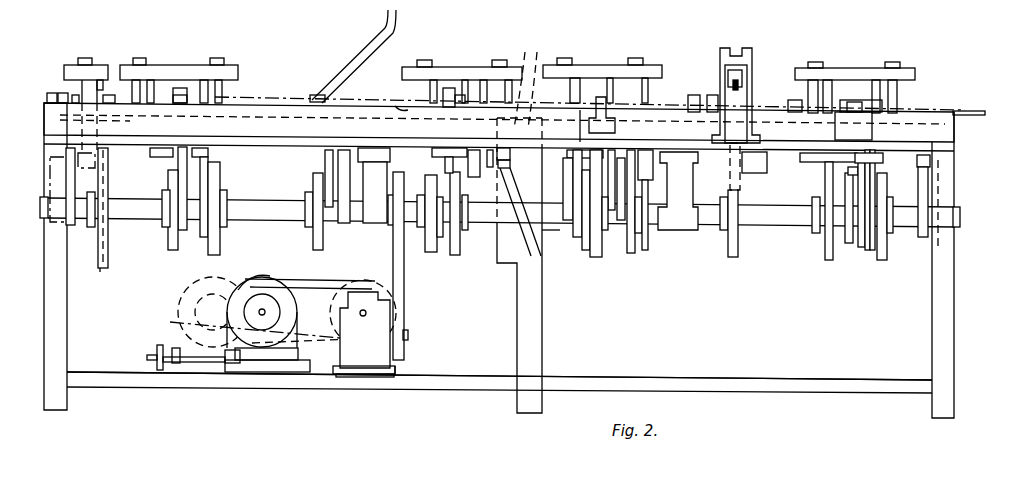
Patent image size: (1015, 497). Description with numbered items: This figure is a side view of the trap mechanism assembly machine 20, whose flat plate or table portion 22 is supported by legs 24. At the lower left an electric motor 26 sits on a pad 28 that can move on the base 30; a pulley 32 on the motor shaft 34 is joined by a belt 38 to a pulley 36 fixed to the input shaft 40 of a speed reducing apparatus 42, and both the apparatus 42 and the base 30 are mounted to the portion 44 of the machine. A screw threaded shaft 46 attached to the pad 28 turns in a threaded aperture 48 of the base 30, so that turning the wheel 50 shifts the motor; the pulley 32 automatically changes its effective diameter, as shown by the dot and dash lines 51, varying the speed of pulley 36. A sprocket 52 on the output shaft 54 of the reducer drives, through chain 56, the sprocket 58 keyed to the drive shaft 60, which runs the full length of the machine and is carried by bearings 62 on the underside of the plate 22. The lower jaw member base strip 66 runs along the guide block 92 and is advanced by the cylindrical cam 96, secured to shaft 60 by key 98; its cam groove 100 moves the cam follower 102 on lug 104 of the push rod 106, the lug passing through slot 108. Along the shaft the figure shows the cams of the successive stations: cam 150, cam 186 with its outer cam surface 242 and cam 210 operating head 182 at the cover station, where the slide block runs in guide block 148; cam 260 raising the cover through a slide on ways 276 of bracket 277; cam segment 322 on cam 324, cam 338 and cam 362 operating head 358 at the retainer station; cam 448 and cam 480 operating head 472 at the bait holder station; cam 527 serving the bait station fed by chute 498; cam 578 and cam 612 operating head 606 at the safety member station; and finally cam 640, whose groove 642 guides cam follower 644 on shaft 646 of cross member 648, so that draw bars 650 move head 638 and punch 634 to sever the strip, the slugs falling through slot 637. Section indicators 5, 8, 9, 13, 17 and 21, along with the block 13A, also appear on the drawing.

The trap mechanism assembly machine 20 is at (955, 168).
The table portion 22 is at (955, 148).
The legs 24 is at (955, 312).
The electric motor 26 is at (237, 370).
The pad 28 is at (270, 374).
The base 30 is at (293, 374).
The pulley 32 is at (258, 278).
The motor shaft 34 is at (281, 331).
The pulley 36 is at (310, 294).
The belt 38 is at (300, 280).
The input shaft 40 is at (363, 316).
The speed reducing apparatus 42 is at (365, 380).
The portion of the machine 44 is at (452, 386).
The screw threaded shaft 46 is at (205, 368).
The threaded aperture 48 is at (166, 372).
The wheel 50 is at (156, 357).
The dot and dash lines 51 is at (180, 320).
The sprocket 52 is at (398, 378).
The output shaft 54 is at (396, 366).
The chain 56 is at (406, 334).
The sprocket 58 is at (394, 258).
The drive shaft 60 is at (724, 230).
The bearings 62 is at (680, 232).
The lower jaw member base strip 66 is at (965, 116).
The guide block 92 is at (955, 140).
The cylindrical cam 96 is at (518, 280).
The key 98 is at (496, 205).
The cam groove 100 is at (578, 236).
The cam follower 102 is at (500, 165).
The lug 104 is at (519, 84).
The push rod 106 is at (403, 112).
The slot 108 is at (600, 96).
The guide block 148 is at (835, 128).
The cam 150 is at (828, 262).
The head 182 is at (915, 72).
The cam 186 is at (850, 248).
The cam 210 is at (882, 260).
The cam surface 242 is at (870, 252).
The cam 260 is at (733, 258).
The ways 276 is at (735, 48).
The bracket 277 is at (720, 70).
The cam segment 322 is at (645, 250).
The cam 324 is at (630, 256).
The cam 338 is at (560, 268).
The head 358 is at (622, 65).
The cam 362 is at (592, 262).
The cam 448 is at (456, 257).
The head 472 is at (445, 66).
The cam 480 is at (430, 254).
The chute 498 is at (384, 24).
The cam 527 is at (318, 177).
The cam 578 is at (215, 255).
The head 606 is at (197, 55).
The cam 612 is at (170, 245).
The punch 634 is at (66, 80).
The slot 637 is at (100, 118).
The head 638 is at (118, 52).
The cam 640 is at (100, 268).
The groove 642 is at (106, 262).
The cam follower 644 is at (95, 158).
The shaft 646 is at (95, 168).
The cross member 648 is at (65, 163).
The draw bars 650 is at (80, 143).
The block 13A is at (842, 107).
The section line 5 is at (868, 95).
The section line 8 is at (772, 65).
The section line 9 is at (615, 55).
The section line 13 is at (490, 65).
The section line 17 is at (358, 52).
The section line 21 is at (243, 77).